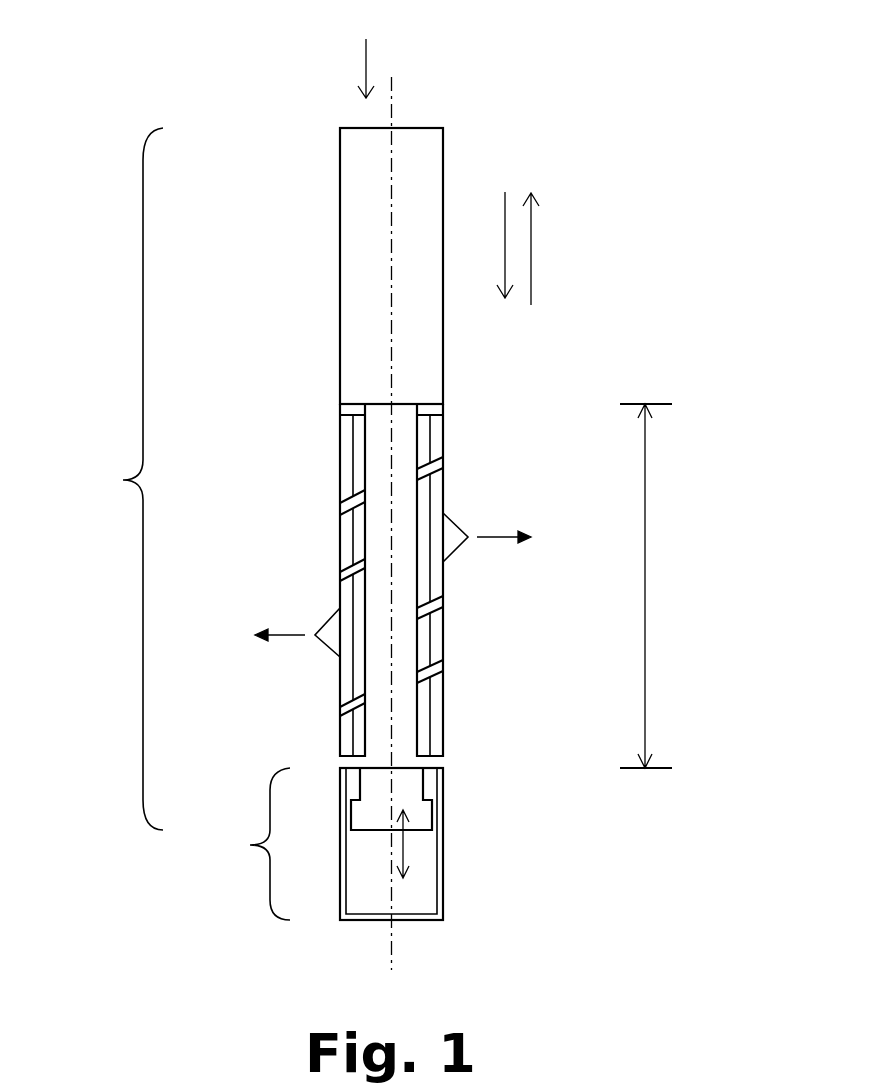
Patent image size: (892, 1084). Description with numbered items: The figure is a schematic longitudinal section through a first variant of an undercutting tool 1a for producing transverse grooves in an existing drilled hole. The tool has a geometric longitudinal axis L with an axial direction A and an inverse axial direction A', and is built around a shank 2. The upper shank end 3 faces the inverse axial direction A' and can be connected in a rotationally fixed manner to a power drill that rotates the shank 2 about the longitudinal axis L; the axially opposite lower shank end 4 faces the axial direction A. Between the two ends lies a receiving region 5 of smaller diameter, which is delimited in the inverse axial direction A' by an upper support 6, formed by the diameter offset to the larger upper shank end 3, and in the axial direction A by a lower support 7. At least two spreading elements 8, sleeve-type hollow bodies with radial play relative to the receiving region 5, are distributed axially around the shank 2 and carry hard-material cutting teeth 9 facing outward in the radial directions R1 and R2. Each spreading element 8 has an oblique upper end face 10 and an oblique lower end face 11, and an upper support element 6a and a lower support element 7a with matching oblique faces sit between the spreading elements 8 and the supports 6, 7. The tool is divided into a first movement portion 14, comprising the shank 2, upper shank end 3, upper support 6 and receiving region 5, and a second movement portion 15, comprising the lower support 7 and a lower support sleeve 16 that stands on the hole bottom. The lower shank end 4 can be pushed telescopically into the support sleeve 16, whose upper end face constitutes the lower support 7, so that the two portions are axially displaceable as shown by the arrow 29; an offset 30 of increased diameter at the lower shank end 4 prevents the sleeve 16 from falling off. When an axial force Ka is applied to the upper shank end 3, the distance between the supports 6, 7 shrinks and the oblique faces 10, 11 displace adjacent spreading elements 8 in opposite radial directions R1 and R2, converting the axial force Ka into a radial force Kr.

The undercutting tool 1a is at (153, 36).
The shank 2 is at (289, 274).
The upper shank end 3 is at (355, 163).
The lower shank end 4 is at (403, 792).
The receiving region 5 is at (649, 586).
The upper support 6 is at (345, 407).
The upper support element 6a is at (432, 442).
The lower support 7 is at (347, 766).
The lower support element 7a is at (433, 720).
The spreading element 8 is at (345, 589).
The cutting tooth 9 is at (330, 643).
The oblique upper end face 10 is at (343, 512).
The oblique lower end face 11 is at (433, 603).
The first movement portion 14 is at (115, 479).
The second movement portion 15 is at (248, 844).
The lower support sleeve 16 is at (440, 894).
The arrow 29 is at (403, 857).
The offset 30 is at (417, 818).
The longitudinal axis L is at (392, 113).
The axial force Ka is at (374, 49).
The radial force Kr is at (393, 597).
The axial direction A is at (492, 245).
The inverse axial direction A' is at (549, 249).
The radial direction R1 is at (529, 553).
The radial direction R2 is at (256, 646).